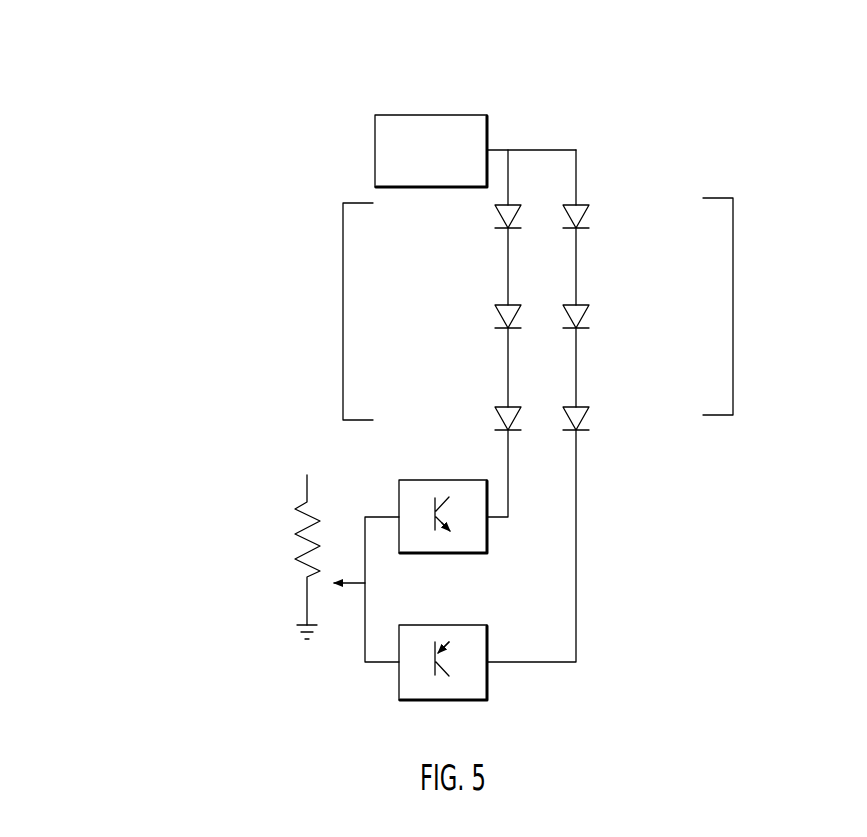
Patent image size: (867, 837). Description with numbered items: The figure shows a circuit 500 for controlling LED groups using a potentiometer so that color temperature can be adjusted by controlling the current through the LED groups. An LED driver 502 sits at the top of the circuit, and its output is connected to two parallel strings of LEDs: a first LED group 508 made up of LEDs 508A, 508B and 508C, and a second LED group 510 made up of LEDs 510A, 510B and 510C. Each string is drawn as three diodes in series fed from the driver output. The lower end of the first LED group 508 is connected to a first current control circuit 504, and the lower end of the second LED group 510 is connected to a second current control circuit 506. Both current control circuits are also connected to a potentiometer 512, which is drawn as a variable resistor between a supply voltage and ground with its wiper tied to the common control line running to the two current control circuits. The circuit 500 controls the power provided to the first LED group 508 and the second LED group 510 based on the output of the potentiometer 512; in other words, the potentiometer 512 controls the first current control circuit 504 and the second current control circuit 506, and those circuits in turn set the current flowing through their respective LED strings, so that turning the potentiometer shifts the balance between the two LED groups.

The circuit 500 is at (118, 78).
The LED driver 502 is at (414, 115).
The first current control circuit 504 is at (487, 537).
The second current control circuit 506 is at (487, 680).
The first LED group 508 is at (343, 315).
The LED 508A is at (490, 223).
The LED 508B is at (490, 323).
The LED 508C is at (490, 422).
The second LED group 510 is at (733, 311).
The LED 510A is at (597, 232).
The LED 510B is at (597, 332).
The LED 510C is at (597, 432).
The potentiometer 512 is at (290, 550).